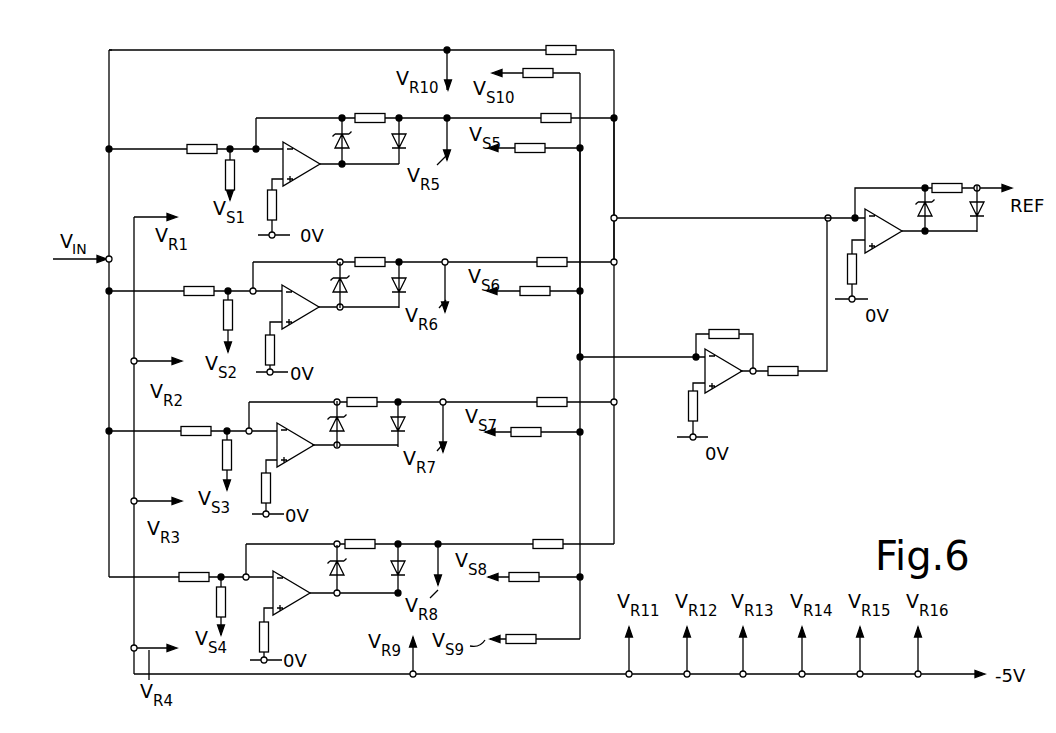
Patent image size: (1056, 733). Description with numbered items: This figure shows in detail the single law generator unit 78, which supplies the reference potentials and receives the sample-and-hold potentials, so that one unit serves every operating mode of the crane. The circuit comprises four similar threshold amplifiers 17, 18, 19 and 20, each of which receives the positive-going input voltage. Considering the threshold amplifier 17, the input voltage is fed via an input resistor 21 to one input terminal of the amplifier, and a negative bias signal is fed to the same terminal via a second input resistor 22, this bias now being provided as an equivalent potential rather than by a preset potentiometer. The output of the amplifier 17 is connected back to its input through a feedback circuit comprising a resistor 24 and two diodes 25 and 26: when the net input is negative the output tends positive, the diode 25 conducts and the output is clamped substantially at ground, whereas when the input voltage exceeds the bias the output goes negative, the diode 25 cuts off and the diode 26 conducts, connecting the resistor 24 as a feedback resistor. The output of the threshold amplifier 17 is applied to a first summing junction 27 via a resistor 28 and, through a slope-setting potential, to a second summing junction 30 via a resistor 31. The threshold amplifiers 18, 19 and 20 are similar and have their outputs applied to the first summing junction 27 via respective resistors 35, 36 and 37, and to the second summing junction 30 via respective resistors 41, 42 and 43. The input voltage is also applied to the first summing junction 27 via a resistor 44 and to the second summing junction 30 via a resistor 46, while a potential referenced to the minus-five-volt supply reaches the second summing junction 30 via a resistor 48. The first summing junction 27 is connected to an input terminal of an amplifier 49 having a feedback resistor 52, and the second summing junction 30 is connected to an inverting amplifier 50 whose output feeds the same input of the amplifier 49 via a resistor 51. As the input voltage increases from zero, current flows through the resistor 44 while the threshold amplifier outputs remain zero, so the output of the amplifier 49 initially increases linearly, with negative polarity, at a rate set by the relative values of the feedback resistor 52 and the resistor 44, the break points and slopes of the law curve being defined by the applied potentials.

The law generator unit 78 is at (372, 26).
The threshold amplifier 17 is at (322, 147).
The threshold amplifier 18 is at (314, 288).
The threshold amplifier 19 is at (314, 430).
The threshold amplifier 20 is at (314, 570).
The input resistor 21 is at (214, 146).
The second input resistor 22 is at (235, 175).
The resistor 24 is at (371, 109).
The diode 25 is at (355, 141).
The diode 26 is at (412, 141).
The first summing junction 27 is at (618, 204).
The resistor 28 is at (561, 110).
The second summing junction 30 is at (580, 211).
The resistor 31 is at (532, 156).
The resistor 35 is at (557, 251).
The resistor 36 is at (552, 396).
The resistor 37 is at (548, 540).
The resistor 41 is at (542, 296).
The resistor 42 is at (528, 437).
The resistor 43 is at (524, 568).
The resistor 44 is at (563, 41).
The resistor 46 is at (529, 68).
The resistor 48 is at (519, 635).
The amplifier 49 is at (882, 240).
The inverting amplifier 50 is at (722, 380).
The resistor 51 is at (786, 363).
The feedback resistor 52 is at (949, 184).